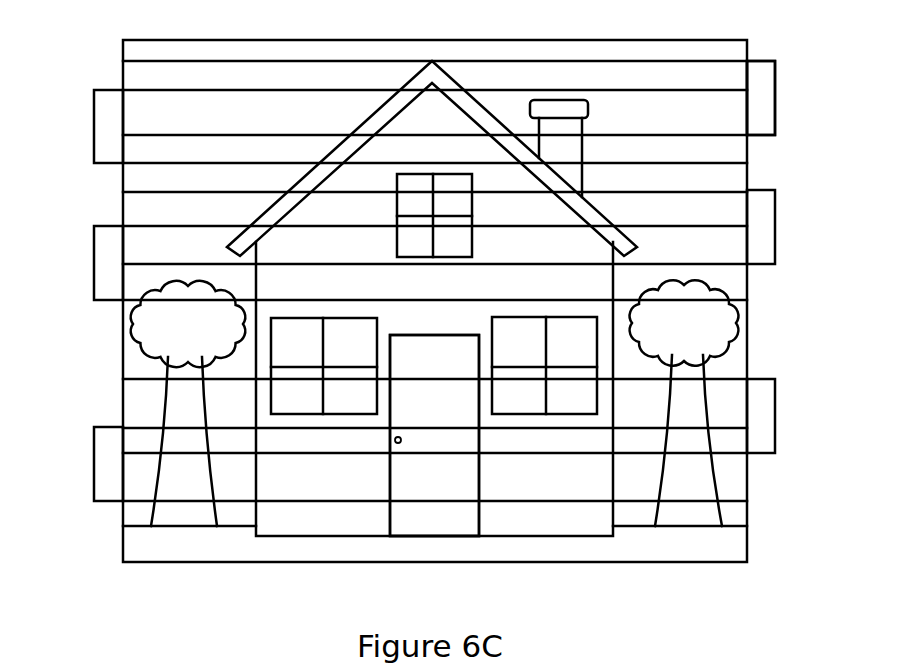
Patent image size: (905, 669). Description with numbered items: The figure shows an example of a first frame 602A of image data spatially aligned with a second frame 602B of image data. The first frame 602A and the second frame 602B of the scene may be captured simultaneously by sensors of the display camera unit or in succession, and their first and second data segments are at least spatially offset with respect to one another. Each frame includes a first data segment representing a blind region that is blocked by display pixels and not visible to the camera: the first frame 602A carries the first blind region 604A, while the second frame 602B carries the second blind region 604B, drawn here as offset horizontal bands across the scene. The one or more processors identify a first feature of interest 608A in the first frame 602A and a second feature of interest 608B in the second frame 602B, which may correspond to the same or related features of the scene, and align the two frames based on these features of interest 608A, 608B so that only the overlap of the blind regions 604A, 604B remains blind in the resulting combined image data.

The first frame 602A is at (802, 36).
The second frame 602B is at (761, 98).
The blind region 604A is at (137, 174).
The second blind region 604B is at (113, 247).
The first feature of interest 608A is at (443, 520).
The second feature of interest 608B is at (434, 435).